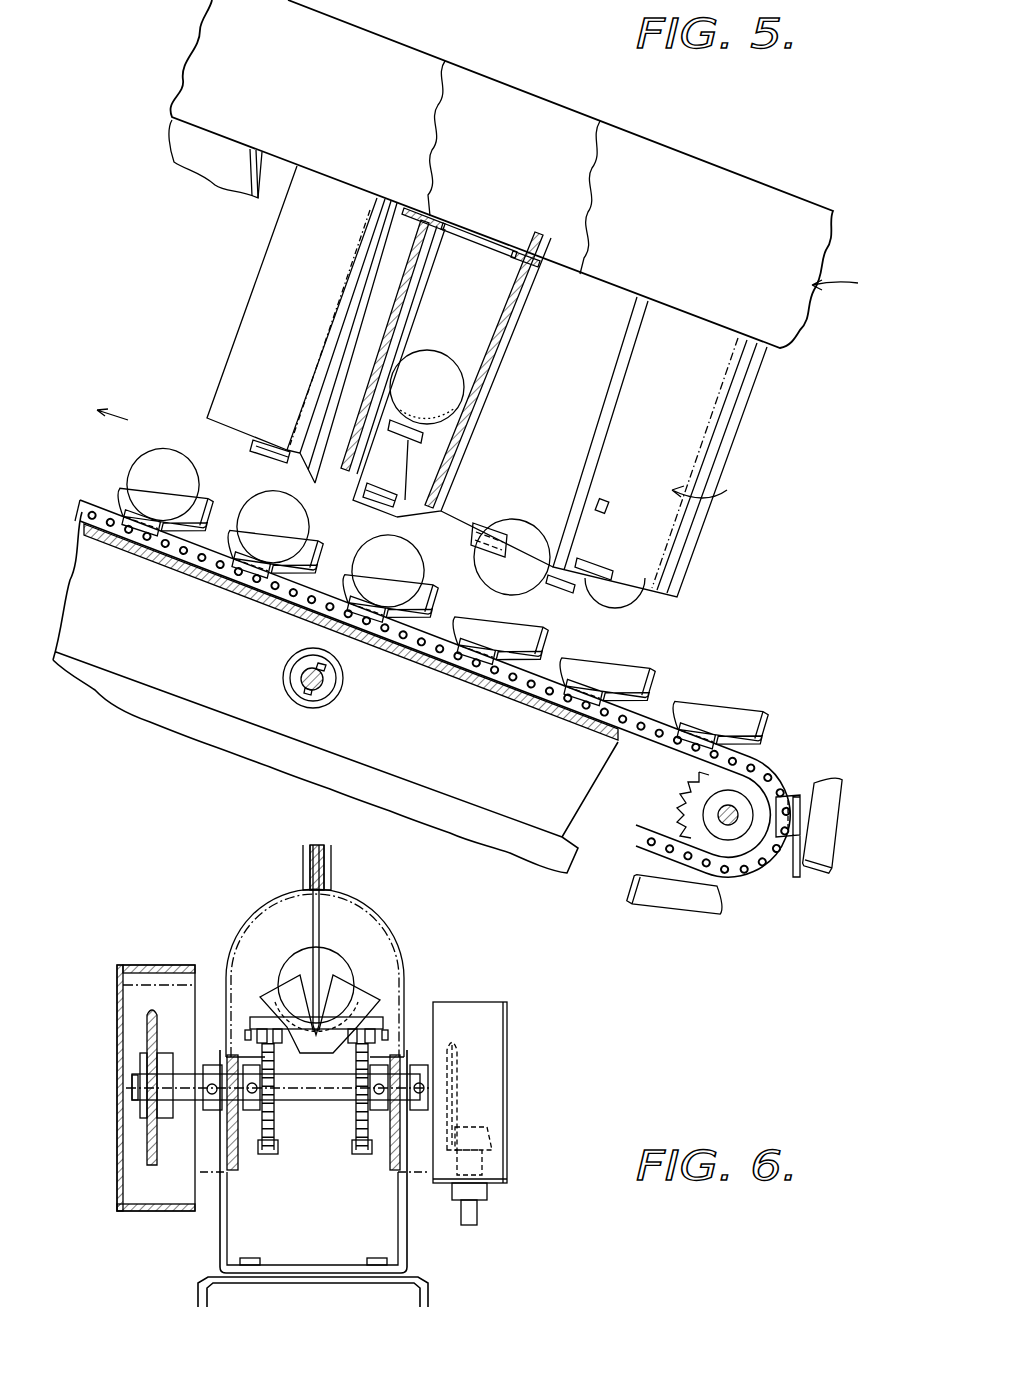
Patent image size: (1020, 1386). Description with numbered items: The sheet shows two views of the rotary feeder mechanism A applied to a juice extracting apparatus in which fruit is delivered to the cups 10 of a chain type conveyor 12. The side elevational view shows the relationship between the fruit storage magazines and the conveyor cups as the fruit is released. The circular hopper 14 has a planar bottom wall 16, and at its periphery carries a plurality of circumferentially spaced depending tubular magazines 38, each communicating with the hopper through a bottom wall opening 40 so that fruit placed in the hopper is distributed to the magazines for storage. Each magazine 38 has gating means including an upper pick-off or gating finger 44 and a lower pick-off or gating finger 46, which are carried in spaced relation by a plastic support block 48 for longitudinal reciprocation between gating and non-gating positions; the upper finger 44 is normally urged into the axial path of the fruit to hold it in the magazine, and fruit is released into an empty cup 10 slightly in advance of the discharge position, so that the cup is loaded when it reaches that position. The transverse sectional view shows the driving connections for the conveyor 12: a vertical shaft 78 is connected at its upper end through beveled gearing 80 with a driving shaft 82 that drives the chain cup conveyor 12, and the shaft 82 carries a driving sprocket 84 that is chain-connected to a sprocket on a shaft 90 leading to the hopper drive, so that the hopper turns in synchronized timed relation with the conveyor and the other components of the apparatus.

In FIG. 5, the cups 10 is at (120, 502).
In FIG. 6, the cups 10 is at (340, 977).
In FIG. 5, the chain type conveyor 12 is at (773, 763).
In FIG. 6, the chain type conveyor 12 is at (387, 1017).
In FIG. 5, the circular hopper 14 is at (728, 180).
In FIG. 5, the bottom wall 16 is at (418, 214).
In FIG. 5, the tubular magazines 38 is at (280, 240).
In FIG. 5, the bottom wall opening 40 is at (500, 250).
In FIG. 5, the upper gating finger 44 is at (425, 440).
In FIG. 5, the lower gating finger 46 is at (252, 443).
In FIG. 5, the support block 48 is at (262, 463).
In FIG. 6, the vertical shaft 78 is at (480, 1215).
In FIG. 6, the beveled gearing 80 is at (500, 1090).
In FIG. 6, the driving shaft 82 is at (322, 1100).
In FIG. 6, the driving sprocket 84 is at (148, 1160).
In FIG. 5, the shaft 90 is at (327, 686).
In FIG. 5, the rotary feeder mechanism A is at (845, 284).